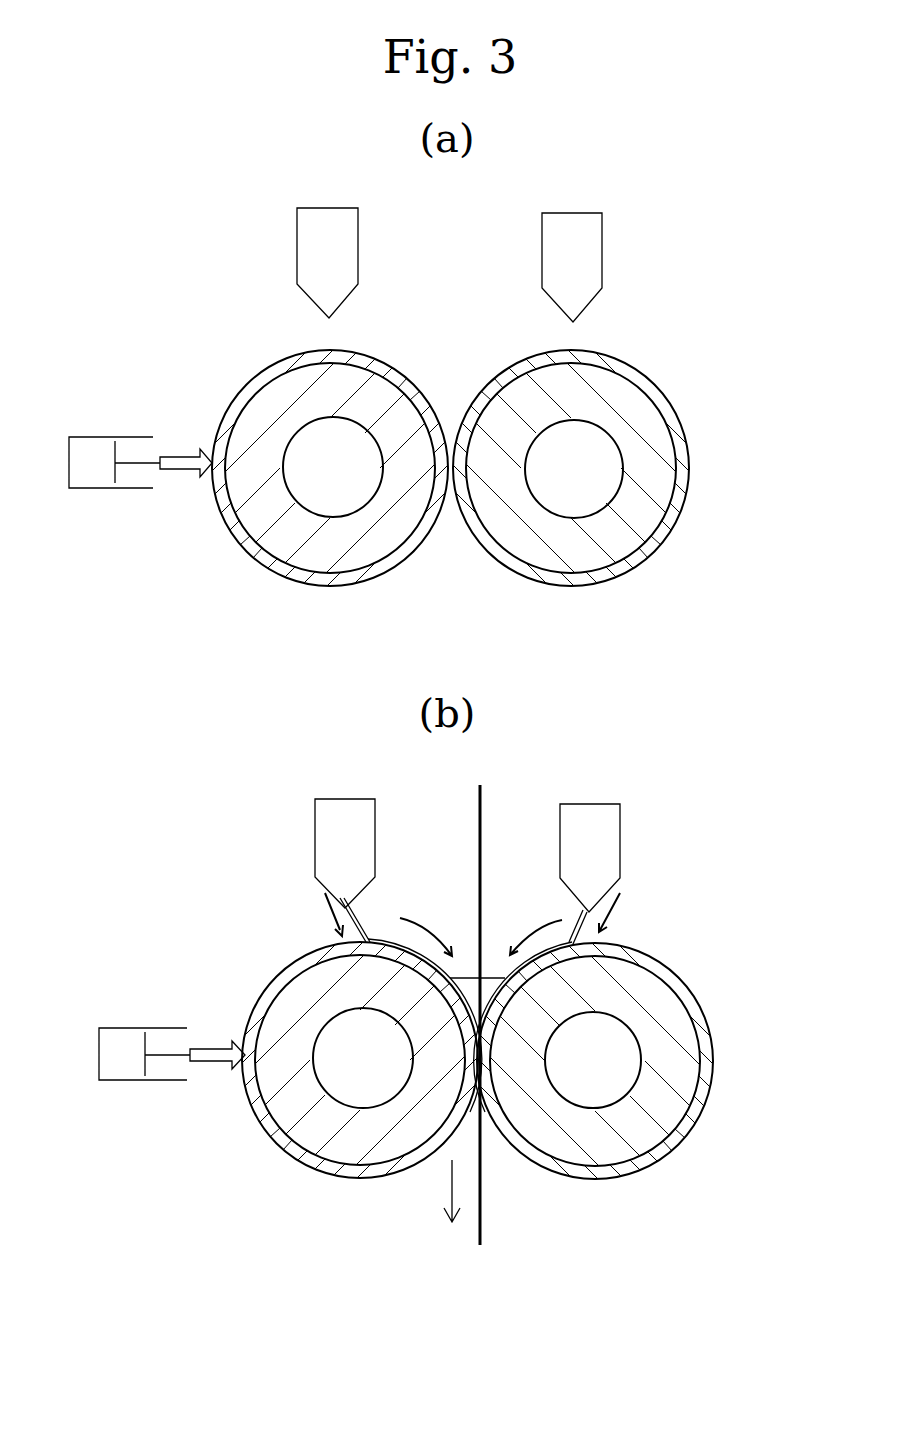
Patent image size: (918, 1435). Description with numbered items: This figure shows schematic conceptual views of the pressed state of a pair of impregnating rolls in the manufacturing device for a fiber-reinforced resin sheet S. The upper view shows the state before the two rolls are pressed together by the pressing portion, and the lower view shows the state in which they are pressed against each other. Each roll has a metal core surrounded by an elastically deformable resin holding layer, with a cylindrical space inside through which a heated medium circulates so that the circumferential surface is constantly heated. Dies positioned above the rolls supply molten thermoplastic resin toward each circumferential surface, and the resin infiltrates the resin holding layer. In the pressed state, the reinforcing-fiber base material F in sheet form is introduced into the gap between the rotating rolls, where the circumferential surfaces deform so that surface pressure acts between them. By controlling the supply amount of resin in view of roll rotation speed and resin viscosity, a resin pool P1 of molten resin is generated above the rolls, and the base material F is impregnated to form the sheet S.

The resin pool P1 is at (485, 978).
The reinforcing-fiber base material F is at (478, 905).
The fiber-reinforced resin sheet S is at (477, 1185).